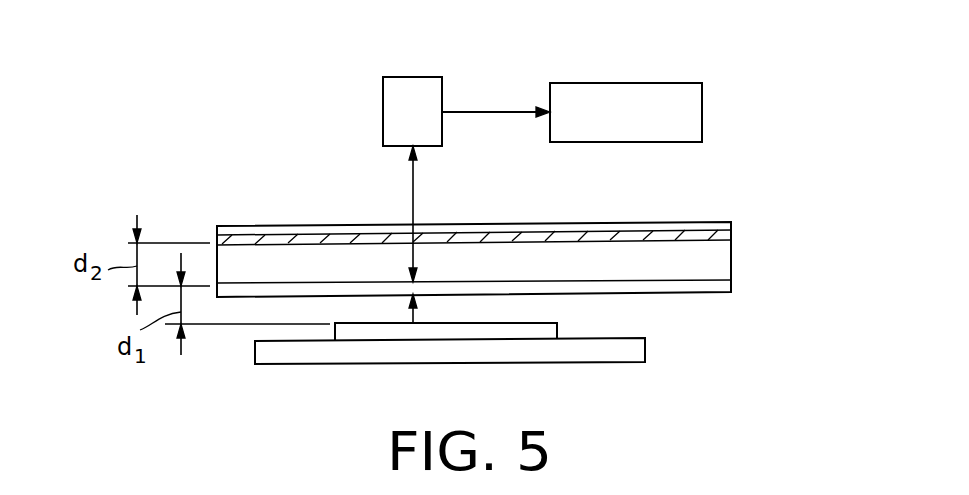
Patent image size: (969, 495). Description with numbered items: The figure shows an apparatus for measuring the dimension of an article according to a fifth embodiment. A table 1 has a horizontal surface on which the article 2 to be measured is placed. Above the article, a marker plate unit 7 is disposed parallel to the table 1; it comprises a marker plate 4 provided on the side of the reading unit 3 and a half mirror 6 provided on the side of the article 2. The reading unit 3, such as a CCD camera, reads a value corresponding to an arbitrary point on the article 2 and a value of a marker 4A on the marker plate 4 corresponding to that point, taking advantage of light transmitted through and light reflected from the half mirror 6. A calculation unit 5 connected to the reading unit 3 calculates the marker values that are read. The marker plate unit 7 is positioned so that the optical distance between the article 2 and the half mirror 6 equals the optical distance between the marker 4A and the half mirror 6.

The table 1 is at (518, 350).
The article 2 is at (545, 332).
The reading unit 3 is at (415, 77).
The marker plate 4 is at (638, 222).
The marker 4A is at (714, 239).
The calculation unit 5 is at (641, 82).
The half mirror 6 is at (688, 293).
The marker plate unit 7 is at (783, 312).